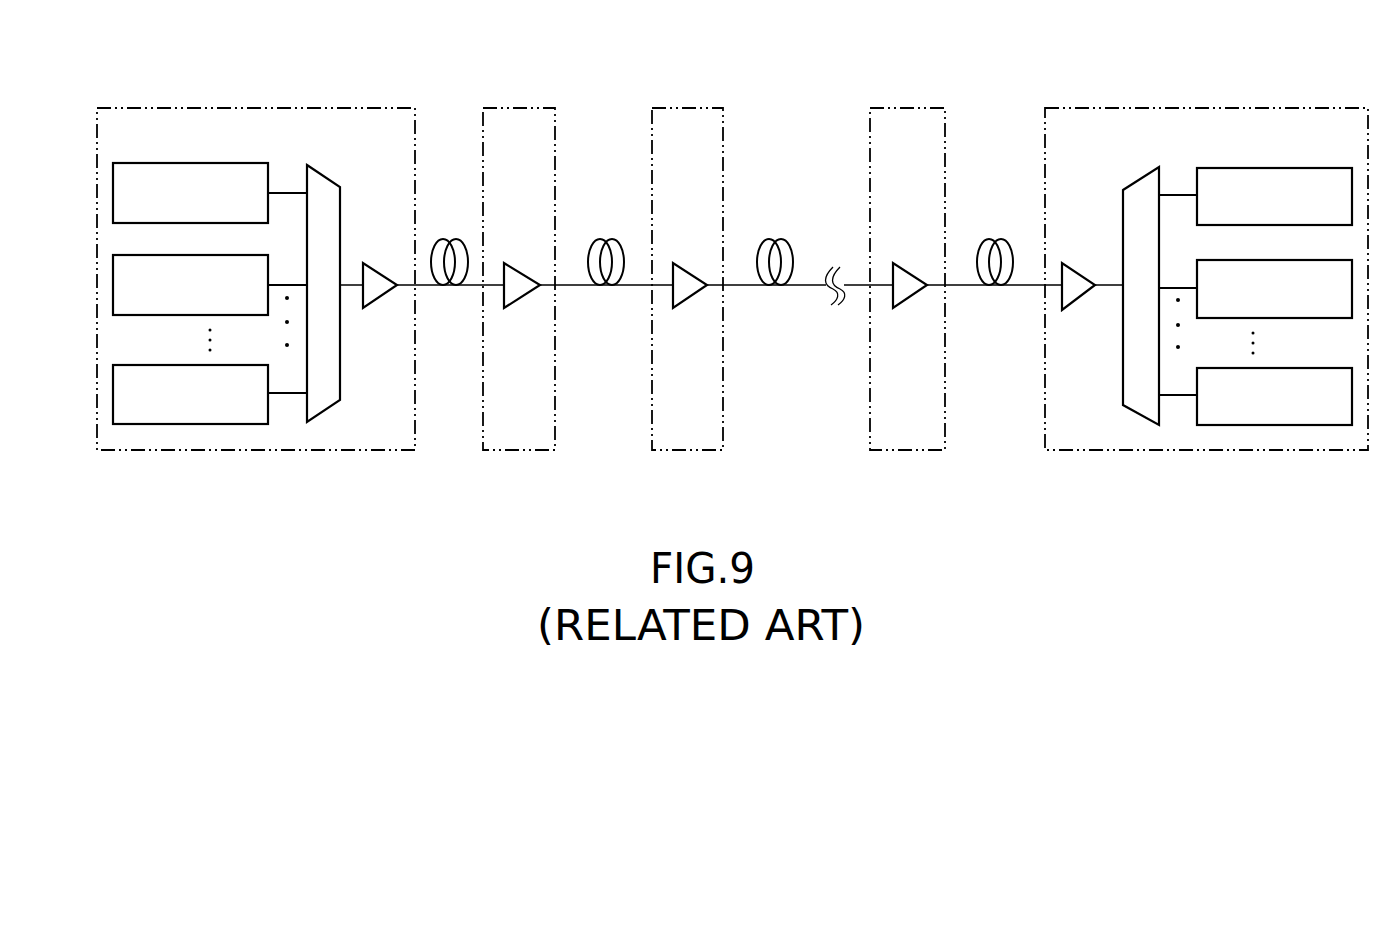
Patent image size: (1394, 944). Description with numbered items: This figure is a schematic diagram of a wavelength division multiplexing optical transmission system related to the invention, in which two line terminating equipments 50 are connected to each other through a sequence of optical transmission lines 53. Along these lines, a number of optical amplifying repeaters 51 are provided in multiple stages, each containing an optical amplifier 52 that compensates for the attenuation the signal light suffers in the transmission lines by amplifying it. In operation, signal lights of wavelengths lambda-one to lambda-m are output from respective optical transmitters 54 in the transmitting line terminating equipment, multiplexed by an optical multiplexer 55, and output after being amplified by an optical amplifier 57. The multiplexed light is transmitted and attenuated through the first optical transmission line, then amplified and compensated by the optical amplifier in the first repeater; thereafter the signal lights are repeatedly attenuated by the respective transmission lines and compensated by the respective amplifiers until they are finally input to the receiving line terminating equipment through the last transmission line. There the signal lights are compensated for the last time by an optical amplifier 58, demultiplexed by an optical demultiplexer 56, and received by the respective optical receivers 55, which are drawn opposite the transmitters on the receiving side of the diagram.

The line terminating equipment 50 is at (283, 108).
The optical amplifying repeater 51 is at (918, 104).
The optical amplifier 52 is at (517, 302).
The optical transmission line 53 is at (443, 297).
The optical transmitter 54 is at (190, 365).
The optical multiplexer 55 is at (342, 383).
The optical demultiplexer 56 is at (1123, 385).
The optical amplifier 57 is at (377, 302).
The optical amplifier 58 is at (1073, 305).